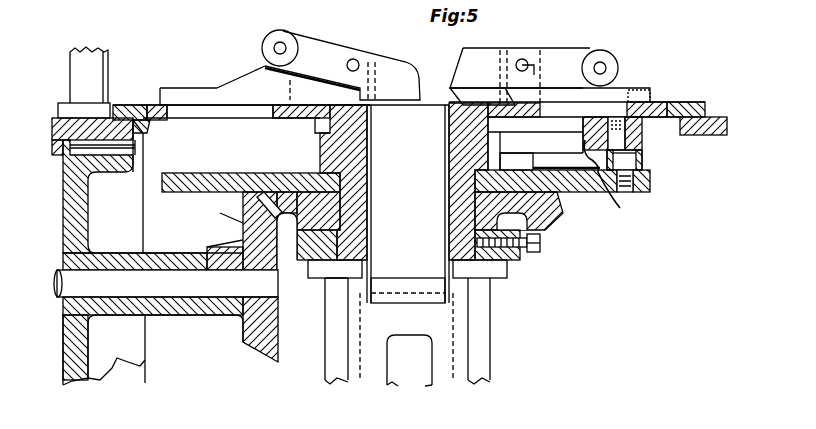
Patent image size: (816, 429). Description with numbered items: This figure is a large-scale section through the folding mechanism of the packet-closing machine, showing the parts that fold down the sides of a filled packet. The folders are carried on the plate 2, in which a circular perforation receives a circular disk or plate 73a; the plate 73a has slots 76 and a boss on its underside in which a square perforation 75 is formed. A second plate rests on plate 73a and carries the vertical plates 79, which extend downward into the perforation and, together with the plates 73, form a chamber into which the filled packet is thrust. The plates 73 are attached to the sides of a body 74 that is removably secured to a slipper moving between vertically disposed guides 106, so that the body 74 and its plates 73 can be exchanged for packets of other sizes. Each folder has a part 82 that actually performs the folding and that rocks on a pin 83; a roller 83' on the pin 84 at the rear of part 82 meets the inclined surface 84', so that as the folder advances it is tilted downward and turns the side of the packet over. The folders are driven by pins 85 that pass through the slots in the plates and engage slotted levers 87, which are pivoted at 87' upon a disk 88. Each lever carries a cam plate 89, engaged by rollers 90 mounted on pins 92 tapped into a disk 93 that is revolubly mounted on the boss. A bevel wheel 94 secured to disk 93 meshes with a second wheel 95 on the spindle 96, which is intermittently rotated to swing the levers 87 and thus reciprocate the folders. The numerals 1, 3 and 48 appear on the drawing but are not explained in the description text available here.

The housing wall 1 is at (89, 203).
The plate 2 is at (62, 163).
The standard post 3 is at (84, 82).
The packing piece 48 is at (168, 131).
The plates 73 is at (445, 155).
The circular disk or plate 73a is at (143, 97).
The body 74 is at (425, 281).
The square perforation 75 is at (452, 224).
The slots 76 is at (228, 128).
The vertical plates 79 is at (408, 204).
The folder part 82 is at (318, 42).
The pin 83 is at (432, 50).
The roller 83' is at (434, 54).
The pin 84 is at (442, 58).
The inclined surface 84' is at (432, 85).
The pins 85 is at (640, 108).
The levers 87 is at (582, 185).
The lever pivot 87' is at (633, 138).
The disk 88 is at (547, 122).
The cam plate 89 is at (594, 189).
The rollers 90 is at (643, 162).
The pins 92 is at (628, 192).
The disk 93 is at (183, 195).
The bevel wheel 94 is at (254, 204).
The second wheel 95 is at (243, 244).
The spindle 96 is at (166, 327).
The vertically disposed guides 106 is at (328, 325).